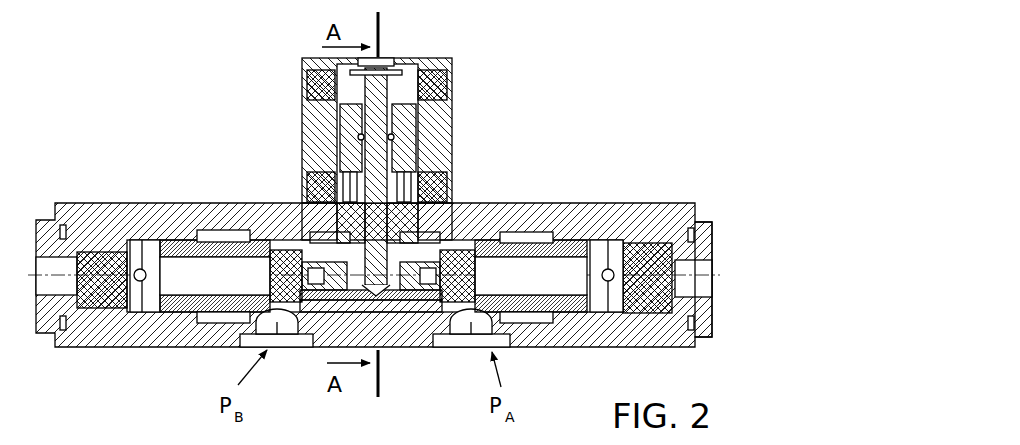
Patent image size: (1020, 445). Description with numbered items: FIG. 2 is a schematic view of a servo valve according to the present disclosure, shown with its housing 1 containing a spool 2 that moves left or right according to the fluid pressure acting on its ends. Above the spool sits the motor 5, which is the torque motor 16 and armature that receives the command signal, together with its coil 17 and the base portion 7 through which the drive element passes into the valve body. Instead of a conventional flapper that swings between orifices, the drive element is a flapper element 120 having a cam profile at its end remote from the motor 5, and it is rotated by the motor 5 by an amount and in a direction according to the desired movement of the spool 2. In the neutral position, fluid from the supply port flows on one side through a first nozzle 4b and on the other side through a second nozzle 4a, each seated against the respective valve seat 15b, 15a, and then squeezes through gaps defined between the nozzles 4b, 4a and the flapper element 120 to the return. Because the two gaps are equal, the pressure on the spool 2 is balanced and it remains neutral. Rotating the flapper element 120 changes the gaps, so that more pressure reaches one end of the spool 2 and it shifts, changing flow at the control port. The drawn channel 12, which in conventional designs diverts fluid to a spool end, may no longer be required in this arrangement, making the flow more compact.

The valve housing 1 is at (124, 344).
The spool 2 is at (216, 323).
The nozzle 4a is at (400, 262).
The nozzle 4b is at (330, 268).
The motor 5 is at (442, 130).
The actuator base 7 is at (448, 204).
The channel 12 is at (350, 296).
The valve seat A 15a is at (470, 288).
The valve seat B 15b is at (283, 264).
The torque motor 16 is at (702, 319).
The coil 17 is at (304, 180).
The flapper element 120 is at (348, 142).